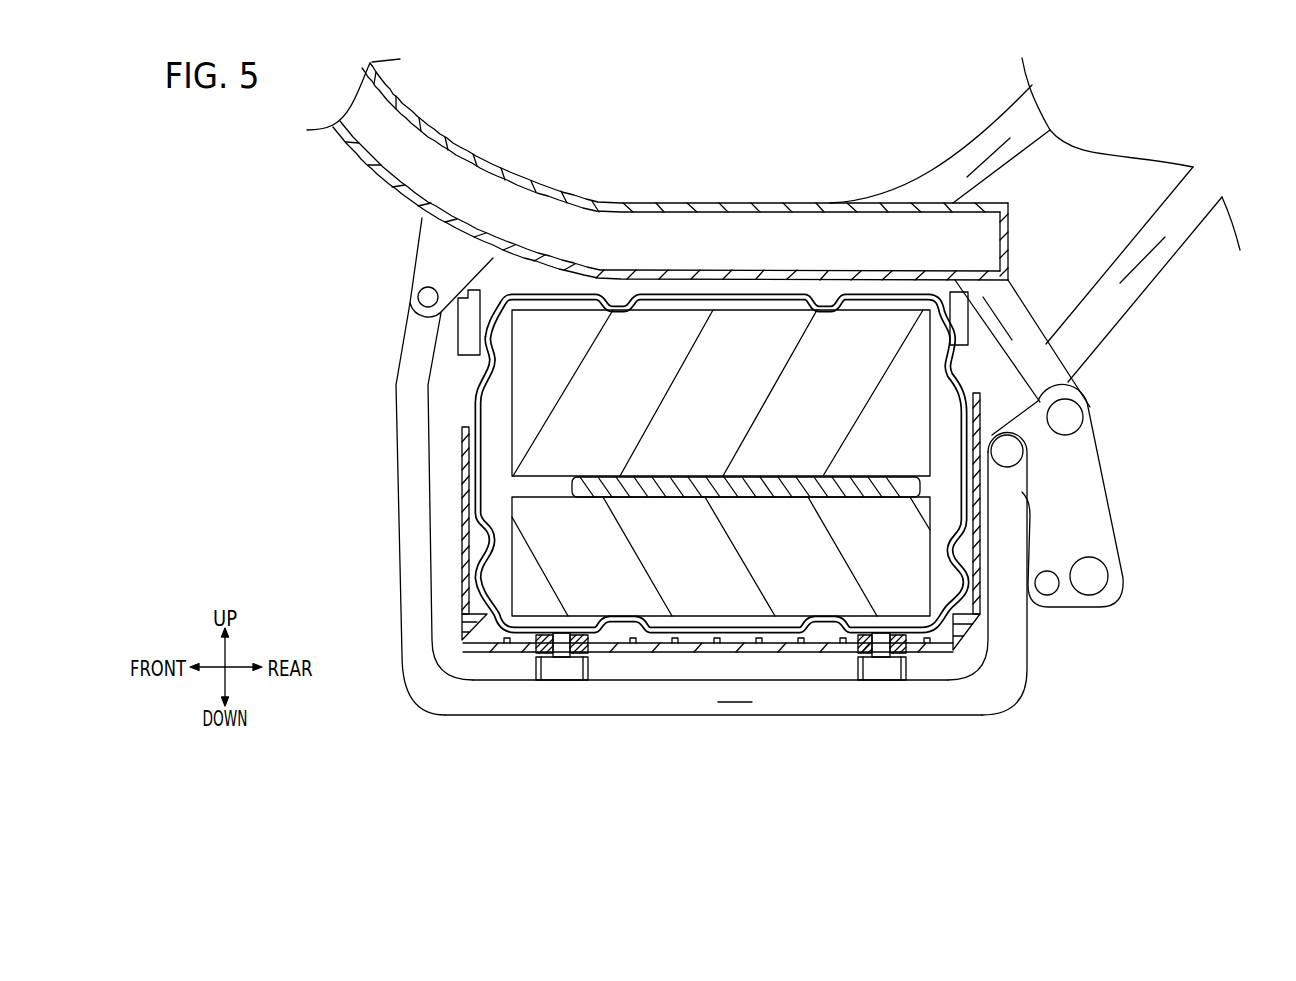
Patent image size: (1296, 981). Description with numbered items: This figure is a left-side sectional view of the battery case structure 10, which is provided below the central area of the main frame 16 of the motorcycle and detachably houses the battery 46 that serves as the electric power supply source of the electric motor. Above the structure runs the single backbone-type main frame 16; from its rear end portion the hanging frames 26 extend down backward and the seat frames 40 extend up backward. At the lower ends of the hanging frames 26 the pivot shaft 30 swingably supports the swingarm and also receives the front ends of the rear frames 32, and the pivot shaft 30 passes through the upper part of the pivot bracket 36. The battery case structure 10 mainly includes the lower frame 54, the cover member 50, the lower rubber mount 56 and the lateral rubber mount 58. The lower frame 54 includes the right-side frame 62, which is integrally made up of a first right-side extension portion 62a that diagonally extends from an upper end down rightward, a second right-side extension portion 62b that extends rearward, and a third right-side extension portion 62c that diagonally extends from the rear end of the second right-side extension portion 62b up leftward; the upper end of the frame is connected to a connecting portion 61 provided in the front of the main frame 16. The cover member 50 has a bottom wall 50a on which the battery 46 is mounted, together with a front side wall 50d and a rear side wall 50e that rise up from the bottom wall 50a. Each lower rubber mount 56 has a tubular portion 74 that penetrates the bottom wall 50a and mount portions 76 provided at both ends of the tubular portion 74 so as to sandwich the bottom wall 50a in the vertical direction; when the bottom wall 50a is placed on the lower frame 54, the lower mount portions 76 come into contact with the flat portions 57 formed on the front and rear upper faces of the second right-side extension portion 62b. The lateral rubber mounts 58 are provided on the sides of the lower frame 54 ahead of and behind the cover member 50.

The battery case structure 10 is at (600, 132).
The main frame 16 is at (407, 102).
The hanging frames 26 is at (1010, 307).
The pivot shaft 30 is at (1070, 410).
The rear frames 32 is at (1190, 220).
The pivot bracket 36 is at (1076, 495).
The seat frames 40 is at (1002, 123).
The battery 46 is at (647, 332).
The cover member 50 is at (695, 526).
The bottom wall 50a is at (787, 650).
The front side wall 50d is at (461, 527).
The rear side wall 50e is at (980, 537).
The lower frame 54 is at (380, 352).
The lower rubber mount 56 is at (720, 715).
The flat portions 57 is at (653, 753).
The lateral rubber mount 58 is at (447, 340).
The connecting portion 61 is at (432, 250).
The right-side frame 62 is at (707, 487).
The first right-side extension portion 62a is at (405, 447).
The second right-side extension portion 62b is at (687, 697).
The third right-side extension portion 62c is at (1004, 624).
The tubular portion 74 is at (582, 640).
The mount portions 76 is at (572, 655).